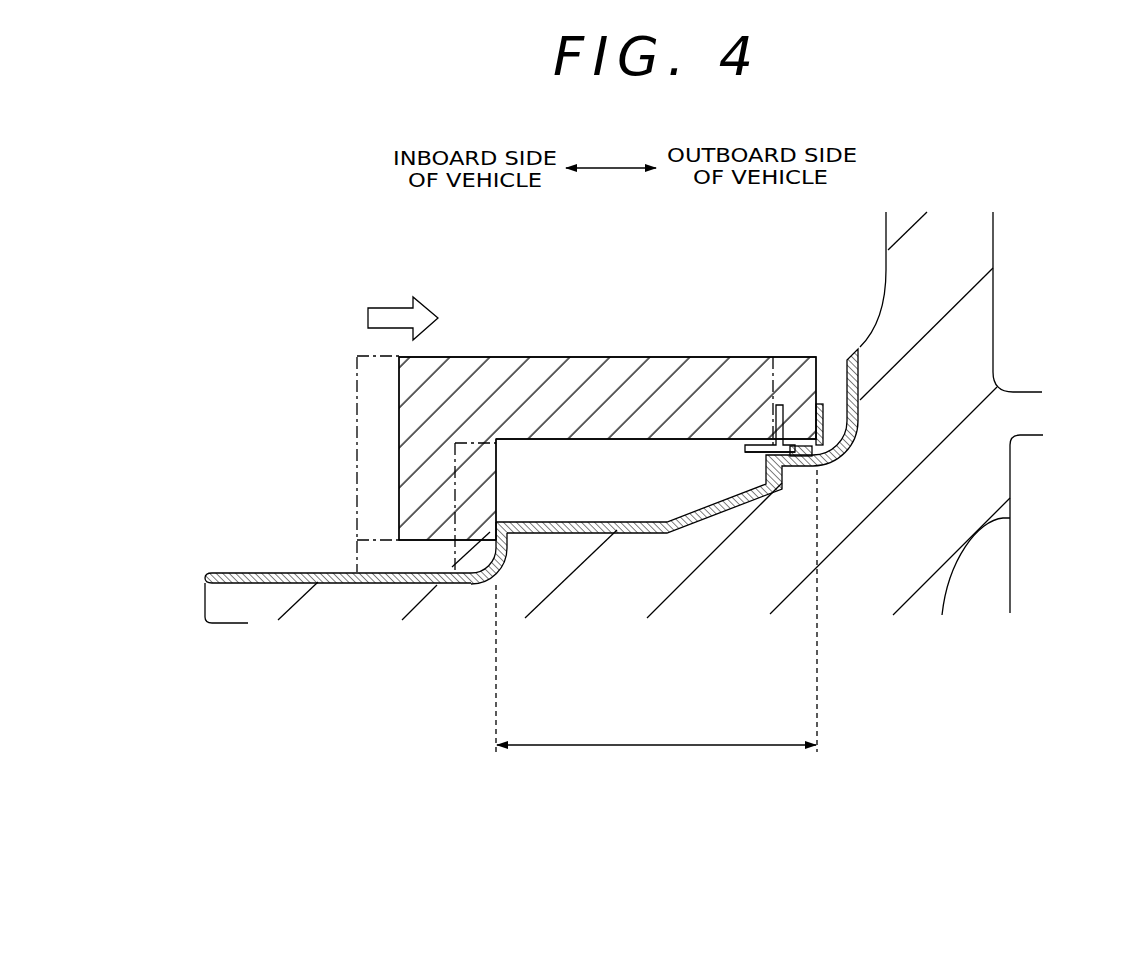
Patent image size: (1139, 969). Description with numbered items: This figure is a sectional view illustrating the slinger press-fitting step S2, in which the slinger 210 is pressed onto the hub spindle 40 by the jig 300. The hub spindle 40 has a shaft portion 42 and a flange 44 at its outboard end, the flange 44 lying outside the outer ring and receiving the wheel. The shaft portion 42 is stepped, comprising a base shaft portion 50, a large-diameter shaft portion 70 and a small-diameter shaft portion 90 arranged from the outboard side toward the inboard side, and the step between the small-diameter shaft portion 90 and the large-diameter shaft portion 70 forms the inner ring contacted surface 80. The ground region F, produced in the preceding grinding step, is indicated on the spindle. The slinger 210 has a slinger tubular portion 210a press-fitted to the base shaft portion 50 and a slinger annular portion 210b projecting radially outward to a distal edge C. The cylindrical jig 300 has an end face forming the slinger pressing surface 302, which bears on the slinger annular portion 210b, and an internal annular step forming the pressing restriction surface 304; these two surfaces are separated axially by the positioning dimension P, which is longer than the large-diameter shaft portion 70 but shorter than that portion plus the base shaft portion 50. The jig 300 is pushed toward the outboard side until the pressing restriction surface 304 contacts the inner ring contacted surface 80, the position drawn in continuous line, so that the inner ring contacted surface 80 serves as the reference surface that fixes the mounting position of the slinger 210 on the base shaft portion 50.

The jig 300 is at (583, 373).
The slinger pressing surface 302 is at (823, 404).
The pressing restriction surface 304 is at (498, 497).
The slinger 210 is at (743, 456).
The slinger tubular portion 210a is at (793, 466).
The slinger annular portion 210b is at (781, 405).
The base shaft portion 50 is at (845, 365).
The flange 44 is at (957, 280).
The hub spindle 40 is at (957, 474).
The shaft portion 42 is at (617, 587).
The small-diameter shaft portion 90 is at (260, 566).
The inner ring contacted surface 80 is at (447, 537).
The large-diameter shaft portion 70 is at (638, 516).
The ground region F is at (704, 523).
The distal edge C is at (835, 440).
The slinger press-fitting step S2 is at (278, 318).
The positioning dimension P is at (656, 611).